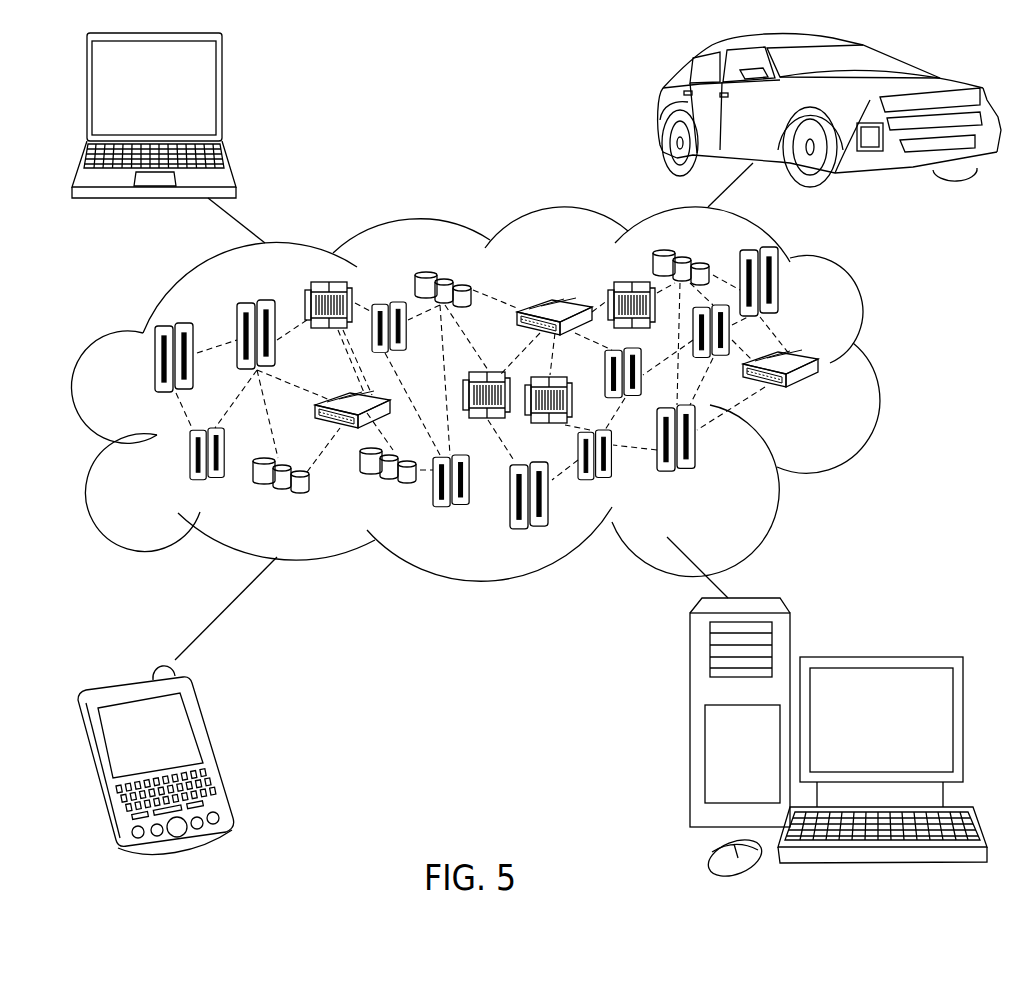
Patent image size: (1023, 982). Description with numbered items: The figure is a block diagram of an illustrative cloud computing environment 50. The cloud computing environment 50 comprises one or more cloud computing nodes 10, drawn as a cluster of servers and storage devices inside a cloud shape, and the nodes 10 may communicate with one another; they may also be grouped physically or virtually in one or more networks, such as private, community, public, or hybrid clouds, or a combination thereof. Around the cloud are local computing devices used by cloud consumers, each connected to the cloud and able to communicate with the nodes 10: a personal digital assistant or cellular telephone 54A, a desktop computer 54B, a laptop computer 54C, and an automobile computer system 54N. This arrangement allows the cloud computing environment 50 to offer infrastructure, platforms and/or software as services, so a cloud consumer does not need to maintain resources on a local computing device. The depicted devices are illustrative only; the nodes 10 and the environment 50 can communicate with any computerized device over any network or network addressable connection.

The cloud computing nodes 10 is at (820, 397).
The cloud computing environment 50 is at (877, 367).
The personal digital assistant (PDA) or cellular telephone 54A is at (213, 747).
The desktop computer 54B is at (878, 657).
The laptop computer 54C is at (222, 95).
The automobile computer system 54N is at (660, 110).